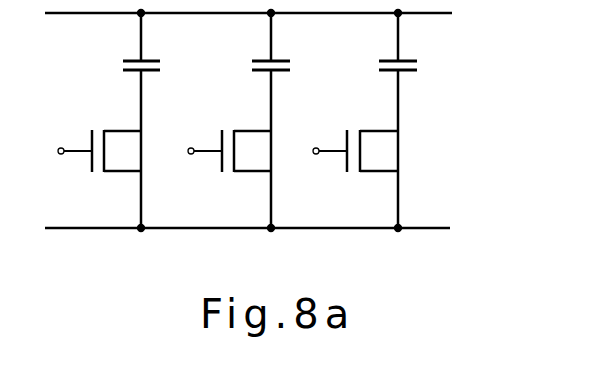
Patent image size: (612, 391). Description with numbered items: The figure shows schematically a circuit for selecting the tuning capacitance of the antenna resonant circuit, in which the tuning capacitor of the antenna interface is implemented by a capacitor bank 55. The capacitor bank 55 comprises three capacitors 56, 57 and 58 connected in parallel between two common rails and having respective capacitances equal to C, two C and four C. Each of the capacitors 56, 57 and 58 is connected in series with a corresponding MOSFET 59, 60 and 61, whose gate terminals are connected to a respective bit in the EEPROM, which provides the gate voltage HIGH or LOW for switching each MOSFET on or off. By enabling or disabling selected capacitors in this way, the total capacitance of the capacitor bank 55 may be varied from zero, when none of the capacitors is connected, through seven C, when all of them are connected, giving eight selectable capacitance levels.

The capacitor bank 55 is at (408, 250).
The capacitor 56 is at (148, 72).
The capacitor 57 is at (278, 72).
The capacitor 58 is at (405, 72).
The MOSFET 59 is at (103, 176).
The MOSFET 60 is at (228, 176).
The MOSFET 61 is at (356, 176).